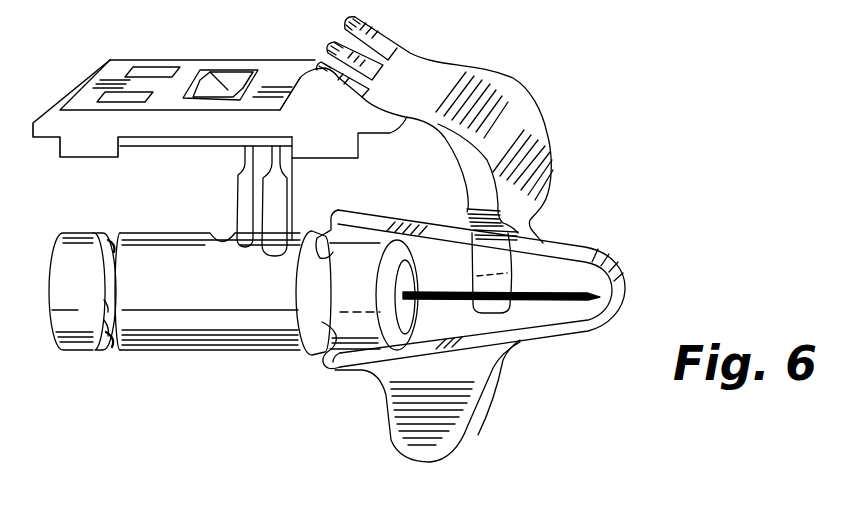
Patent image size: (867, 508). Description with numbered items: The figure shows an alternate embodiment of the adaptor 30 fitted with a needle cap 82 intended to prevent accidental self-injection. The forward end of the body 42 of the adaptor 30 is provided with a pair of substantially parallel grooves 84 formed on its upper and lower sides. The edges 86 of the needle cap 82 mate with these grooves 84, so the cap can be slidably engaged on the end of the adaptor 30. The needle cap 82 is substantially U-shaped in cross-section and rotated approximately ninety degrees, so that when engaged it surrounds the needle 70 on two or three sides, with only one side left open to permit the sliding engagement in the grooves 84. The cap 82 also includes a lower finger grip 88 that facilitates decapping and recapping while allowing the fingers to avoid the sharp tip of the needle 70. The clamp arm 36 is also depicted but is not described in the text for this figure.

The adaptor 30 is at (148, 358).
The clamp arm 36 is at (520, 80).
The body 42 is at (215, 352).
The needle 70 is at (553, 297).
The needle cap 82 is at (619, 246).
The grooves 84 is at (308, 262).
The edges 86 is at (312, 360).
The lower finger grip 88 is at (430, 448).